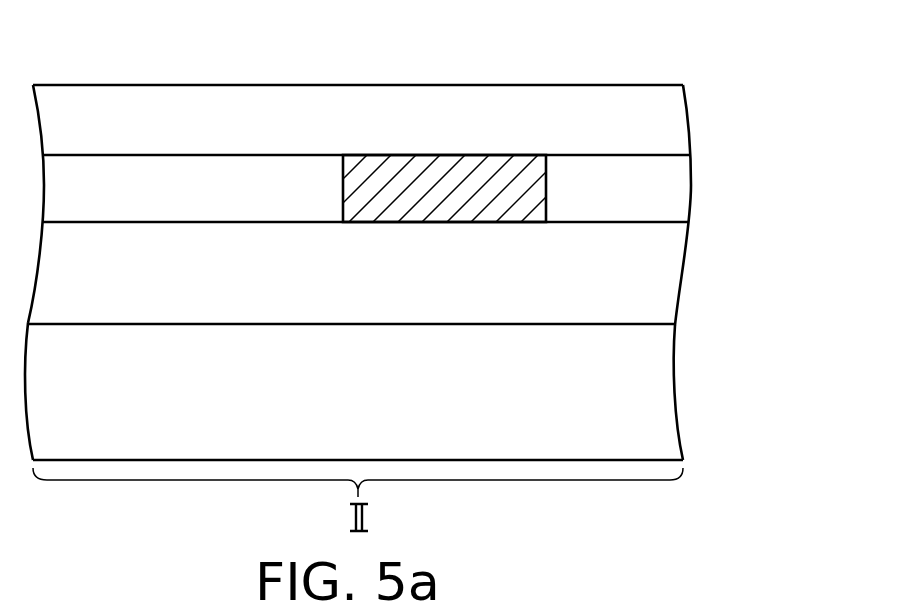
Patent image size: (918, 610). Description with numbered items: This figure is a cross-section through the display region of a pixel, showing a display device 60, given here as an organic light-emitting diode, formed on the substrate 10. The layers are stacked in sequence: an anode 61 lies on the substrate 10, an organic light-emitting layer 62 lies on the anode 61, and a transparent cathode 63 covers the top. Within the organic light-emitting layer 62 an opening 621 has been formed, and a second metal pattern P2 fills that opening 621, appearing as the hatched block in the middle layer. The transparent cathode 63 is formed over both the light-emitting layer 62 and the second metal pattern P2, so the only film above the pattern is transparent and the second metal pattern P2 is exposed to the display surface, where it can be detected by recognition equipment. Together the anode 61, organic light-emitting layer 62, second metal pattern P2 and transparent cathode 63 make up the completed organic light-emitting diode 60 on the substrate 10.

The substrate 10 is at (667, 391).
The display device 60 is at (434, 170).
The anode 61 is at (672, 276).
The organic light-emitting layer 62 is at (410, 119).
The transparent cathode 63 is at (402, 135).
The opening 621 is at (443, 119).
The second metal pattern P2 is at (443, 163).